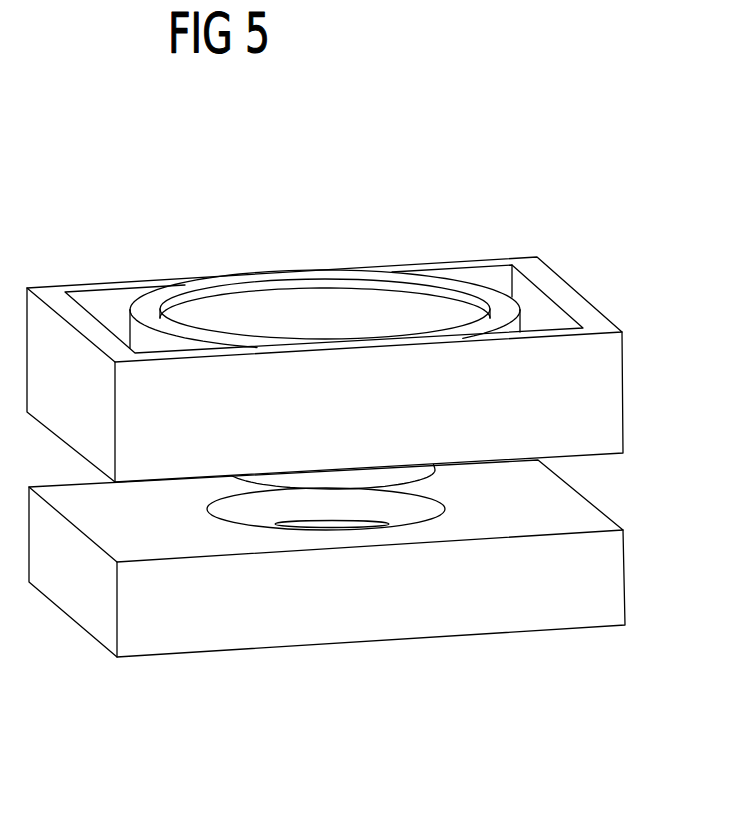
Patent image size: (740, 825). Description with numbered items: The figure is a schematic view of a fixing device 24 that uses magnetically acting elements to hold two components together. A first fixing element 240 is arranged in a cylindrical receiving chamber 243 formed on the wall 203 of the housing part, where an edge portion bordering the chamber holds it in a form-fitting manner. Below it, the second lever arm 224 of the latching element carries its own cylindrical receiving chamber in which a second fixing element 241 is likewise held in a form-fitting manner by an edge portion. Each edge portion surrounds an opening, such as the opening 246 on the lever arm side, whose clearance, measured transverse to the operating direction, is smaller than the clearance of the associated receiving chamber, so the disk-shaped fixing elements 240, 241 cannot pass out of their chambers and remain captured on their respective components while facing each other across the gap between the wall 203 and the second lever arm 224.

The fixing device 24 is at (562, 230).
The wall 203 is at (600, 393).
The second lever arm 224 is at (606, 575).
The first fixing element 240 is at (345, 297).
The second fixing element 241 is at (328, 524).
The cylindrical receiving chamber 243 is at (193, 296).
The opening 246 is at (321, 601).